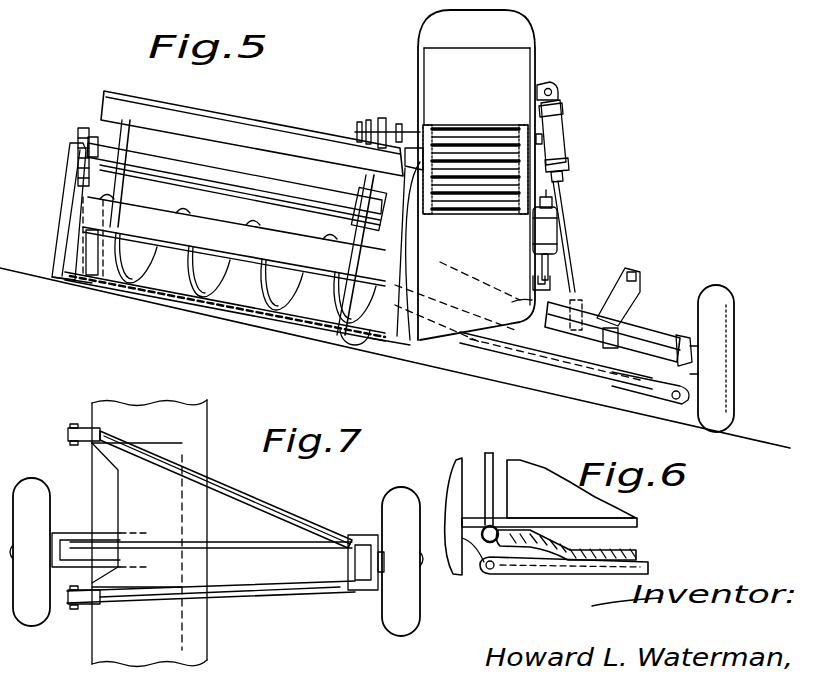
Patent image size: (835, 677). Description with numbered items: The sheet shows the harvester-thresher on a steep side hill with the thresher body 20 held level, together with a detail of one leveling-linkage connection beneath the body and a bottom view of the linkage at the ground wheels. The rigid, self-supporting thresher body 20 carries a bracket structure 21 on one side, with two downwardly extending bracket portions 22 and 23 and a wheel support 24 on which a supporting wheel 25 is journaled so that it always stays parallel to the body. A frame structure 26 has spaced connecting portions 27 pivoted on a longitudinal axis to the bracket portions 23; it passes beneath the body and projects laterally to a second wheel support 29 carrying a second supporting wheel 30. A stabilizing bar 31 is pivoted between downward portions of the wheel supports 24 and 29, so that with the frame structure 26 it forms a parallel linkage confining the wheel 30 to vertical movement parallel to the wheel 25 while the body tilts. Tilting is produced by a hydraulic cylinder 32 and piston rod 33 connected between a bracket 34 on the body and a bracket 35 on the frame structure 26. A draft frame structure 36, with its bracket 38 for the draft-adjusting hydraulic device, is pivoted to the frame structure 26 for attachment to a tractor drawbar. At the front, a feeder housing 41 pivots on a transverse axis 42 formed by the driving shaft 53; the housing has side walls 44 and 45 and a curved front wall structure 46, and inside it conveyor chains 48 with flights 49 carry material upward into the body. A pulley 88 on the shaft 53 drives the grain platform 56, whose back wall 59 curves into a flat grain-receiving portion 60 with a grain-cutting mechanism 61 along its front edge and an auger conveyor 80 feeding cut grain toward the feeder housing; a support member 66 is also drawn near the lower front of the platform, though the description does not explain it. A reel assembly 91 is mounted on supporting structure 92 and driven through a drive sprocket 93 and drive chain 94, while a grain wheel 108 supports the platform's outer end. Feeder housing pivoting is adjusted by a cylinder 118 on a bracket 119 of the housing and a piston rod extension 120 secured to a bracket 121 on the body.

In FIG. 5, the thresher body 20 is at (527, 33).
In FIG. 7, the thresher body 20 is at (207, 632).
In FIG. 6, the thresher body 20 is at (588, 513).
In FIG. 7, the bracket structure 21 is at (200, 460).
In FIG. 6, the bracket structure 21 is at (470, 516).
In FIG. 7, the bracket portion 22 is at (68, 437).
In FIG. 6, the bracket portion 22 is at (484, 568).
In FIG. 7, the bracket portion 23 is at (82, 606).
In FIG. 7, the wheel support 24 is at (60, 533).
In FIG. 5, the supporting wheel 25 is at (348, 340).
In FIG. 7, the supporting wheel 25 is at (28, 478).
In FIG. 5, the frame structure 26 is at (590, 362).
In FIG. 7, the frame structure 26 is at (255, 505).
In FIG. 6, the frame structure 26 is at (636, 548).
In FIG. 7, the connecting portions 27 is at (72, 425).
In FIG. 5, the second wheel support 29 is at (684, 334).
In FIG. 7, the second wheel support 29 is at (372, 535).
In FIG. 5, the second supporting wheel 30 is at (718, 288).
In FIG. 7, the second supporting wheel 30 is at (401, 487).
In FIG. 5, the stabilizing link bar 31 is at (646, 386).
In FIG. 7, the stabilizing link bar 31 is at (234, 547).
In FIG. 6, the stabilizing link bar 31 is at (520, 576).
In FIG. 5, the cylinder 32 is at (565, 119).
In FIG. 5, the piston rod 33 is at (568, 243).
In FIG. 5, the bracket 34 is at (548, 84).
In FIG. 5, the bracket 35 is at (584, 325).
In FIG. 5, the draft frame structure 36 is at (640, 332).
In FIG. 5, the bracket 38 is at (628, 292).
In FIG. 5, the feeder housing 41 is at (428, 338).
In FIG. 5, the transverse axis 42 is at (542, 141).
In FIG. 5, the side wall 44 is at (563, 179).
In FIG. 5, the side wall 45 is at (418, 158).
In FIG. 5, the front wall structure 46 is at (532, 295).
In FIG. 5, the chains 48 is at (433, 196).
In FIG. 5, the conveyor flights 49 is at (475, 157).
In FIG. 5, the transverse shaft 53 is at (470, 138).
In FIG. 5, the grain platform 56 is at (214, 198).
In FIG. 5, the back wall 59 is at (250, 205).
In FIG. 5, the grain-receiving portion 60 is at (230, 312).
In FIG. 5, the grain-cutting mechanism 61 is at (167, 296).
In FIG. 5, the support strut 66 is at (385, 345).
In FIG. 5, the auger conveyor 80 is at (125, 285).
In FIG. 5, the pulley 88 is at (395, 128).
In FIG. 5, the reel assembly 91 is at (242, 127).
In FIG. 5, the supporting structure 92 is at (92, 145).
In FIG. 5, the drive sprocket 93 is at (83, 128).
In FIG. 5, the drive chain 94 is at (80, 132).
In FIG. 5, the grain wheel 108 is at (86, 288).
In FIG. 5, the cylinder 118 is at (560, 226).
In FIG. 5, the bracket 119 is at (552, 200).
In FIG. 5, the piston rod extension 120 is at (550, 266).
In FIG. 5, the bracket 121 is at (533, 270).